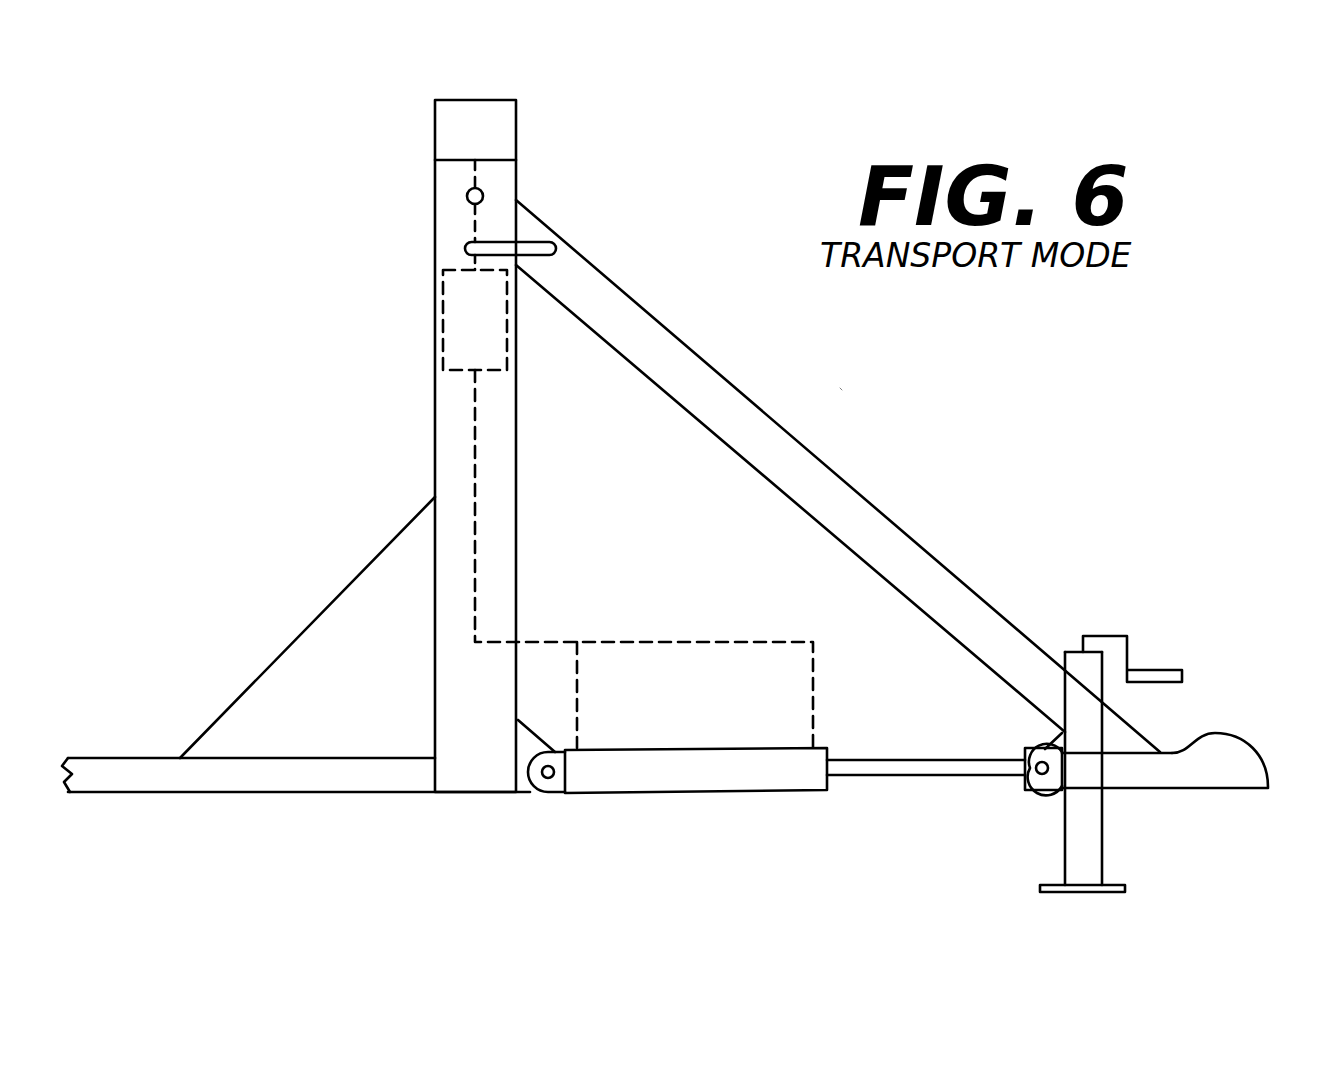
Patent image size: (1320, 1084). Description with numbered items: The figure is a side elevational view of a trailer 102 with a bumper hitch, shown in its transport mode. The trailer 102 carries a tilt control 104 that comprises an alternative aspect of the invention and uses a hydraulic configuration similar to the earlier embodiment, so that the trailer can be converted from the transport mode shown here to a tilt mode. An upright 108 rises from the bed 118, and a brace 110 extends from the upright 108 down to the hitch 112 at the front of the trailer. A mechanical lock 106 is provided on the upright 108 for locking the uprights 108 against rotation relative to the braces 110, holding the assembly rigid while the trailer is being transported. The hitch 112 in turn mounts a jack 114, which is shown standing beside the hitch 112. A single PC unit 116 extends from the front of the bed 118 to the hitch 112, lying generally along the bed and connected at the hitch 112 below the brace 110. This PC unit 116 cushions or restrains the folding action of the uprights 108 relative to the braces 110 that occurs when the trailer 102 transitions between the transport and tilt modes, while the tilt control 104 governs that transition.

The trailer 102 is at (852, 378).
The tilt control 104 is at (258, 344).
The mechanical lock 106 is at (549, 241).
The uprights 108 is at (435, 467).
The braces 110 is at (825, 467).
The hitch 112 is at (1247, 788).
The jack 114 is at (1076, 636).
The PC unit 116 is at (690, 789).
The bed 118 is at (140, 758).